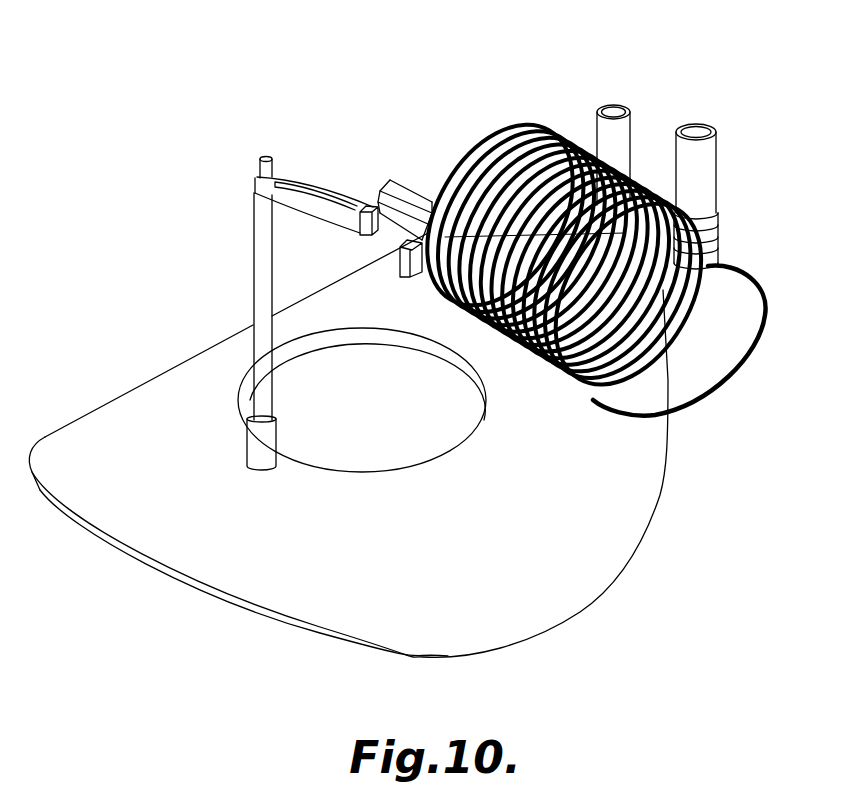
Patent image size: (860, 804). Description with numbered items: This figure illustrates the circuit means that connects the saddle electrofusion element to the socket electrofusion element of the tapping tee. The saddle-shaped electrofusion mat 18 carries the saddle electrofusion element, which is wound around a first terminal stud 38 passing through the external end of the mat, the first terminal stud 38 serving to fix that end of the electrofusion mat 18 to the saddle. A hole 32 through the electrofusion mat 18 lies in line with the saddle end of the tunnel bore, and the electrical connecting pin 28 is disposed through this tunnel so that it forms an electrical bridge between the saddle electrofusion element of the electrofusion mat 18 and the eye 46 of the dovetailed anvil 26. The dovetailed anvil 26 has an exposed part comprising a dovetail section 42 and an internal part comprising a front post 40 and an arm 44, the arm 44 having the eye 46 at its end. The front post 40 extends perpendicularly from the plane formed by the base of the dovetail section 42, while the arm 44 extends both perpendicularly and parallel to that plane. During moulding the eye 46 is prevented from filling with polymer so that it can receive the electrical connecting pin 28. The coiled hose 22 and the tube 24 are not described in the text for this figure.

The electrofusion mat 18 is at (600, 552).
The coiled hose 22 is at (735, 352).
The hose fitting tube 24 is at (722, 184).
The dovetailed anvil 26 is at (357, 198).
The electrical connecting pin 28 is at (262, 275).
The hole 32 is at (267, 470).
The first terminal stud 38 is at (632, 105).
The front post 40 is at (408, 271).
The dovetail section 42 is at (420, 200).
The arm 44 is at (322, 212).
The eye 46 is at (274, 171).